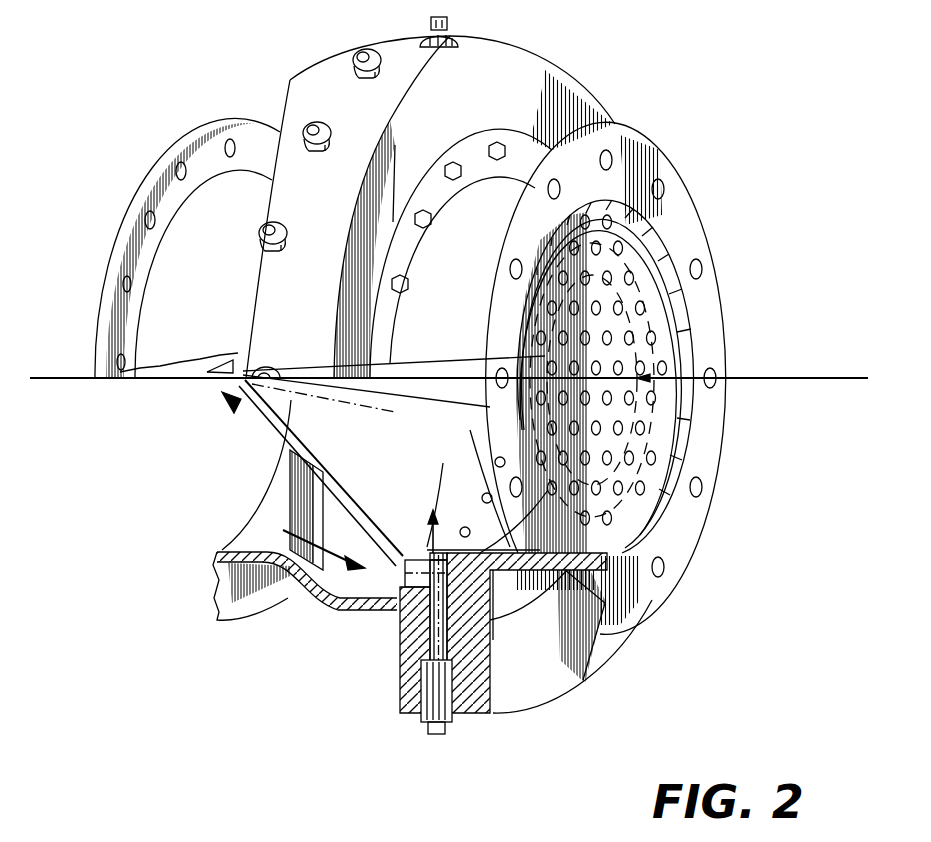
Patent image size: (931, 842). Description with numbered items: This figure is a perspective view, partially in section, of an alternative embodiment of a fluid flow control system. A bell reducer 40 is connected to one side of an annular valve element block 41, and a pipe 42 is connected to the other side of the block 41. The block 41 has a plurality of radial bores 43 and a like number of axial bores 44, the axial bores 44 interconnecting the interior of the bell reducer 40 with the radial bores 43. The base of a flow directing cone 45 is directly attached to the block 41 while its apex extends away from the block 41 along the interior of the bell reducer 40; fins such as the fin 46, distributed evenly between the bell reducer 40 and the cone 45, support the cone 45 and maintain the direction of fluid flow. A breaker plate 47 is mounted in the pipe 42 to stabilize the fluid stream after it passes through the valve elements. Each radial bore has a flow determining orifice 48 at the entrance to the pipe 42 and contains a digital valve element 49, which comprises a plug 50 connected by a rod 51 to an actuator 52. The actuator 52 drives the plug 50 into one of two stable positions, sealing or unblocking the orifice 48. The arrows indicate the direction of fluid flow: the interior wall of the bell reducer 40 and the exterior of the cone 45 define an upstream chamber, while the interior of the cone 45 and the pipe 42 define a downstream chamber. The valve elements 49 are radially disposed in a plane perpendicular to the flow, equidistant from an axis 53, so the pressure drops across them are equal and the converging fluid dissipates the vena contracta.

The bell reducer 40 is at (307, 606).
The annular valve element block 41 is at (580, 670).
The pipe 42 is at (503, 633).
The radial bores 43 is at (434, 650).
The axial bores 44 is at (400, 572).
The flow directing cone 45 is at (232, 395).
The fin 46 is at (290, 503).
The breaker plate 47 is at (673, 428).
The flow determining orifice 48 is at (495, 462).
The digital valve element 49 is at (272, 222).
The plug 50 is at (402, 627).
The rod 51 is at (440, 625).
The actuator 52 is at (422, 692).
The axis 53 is at (830, 378).